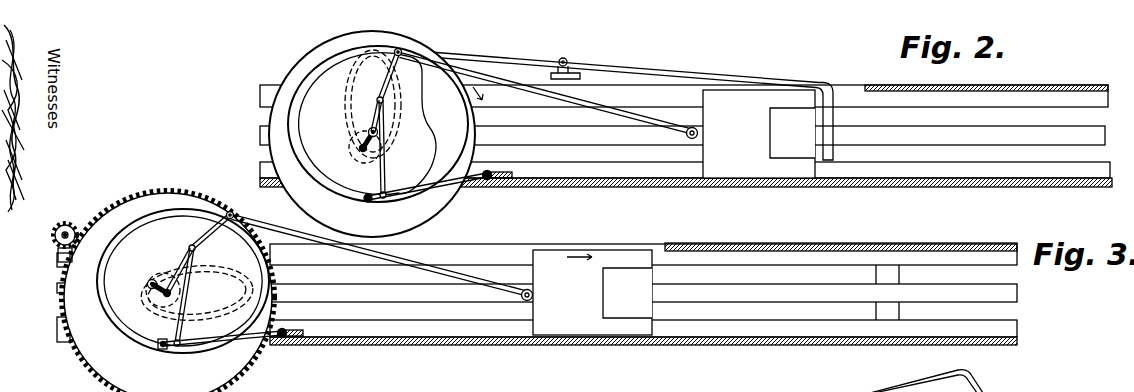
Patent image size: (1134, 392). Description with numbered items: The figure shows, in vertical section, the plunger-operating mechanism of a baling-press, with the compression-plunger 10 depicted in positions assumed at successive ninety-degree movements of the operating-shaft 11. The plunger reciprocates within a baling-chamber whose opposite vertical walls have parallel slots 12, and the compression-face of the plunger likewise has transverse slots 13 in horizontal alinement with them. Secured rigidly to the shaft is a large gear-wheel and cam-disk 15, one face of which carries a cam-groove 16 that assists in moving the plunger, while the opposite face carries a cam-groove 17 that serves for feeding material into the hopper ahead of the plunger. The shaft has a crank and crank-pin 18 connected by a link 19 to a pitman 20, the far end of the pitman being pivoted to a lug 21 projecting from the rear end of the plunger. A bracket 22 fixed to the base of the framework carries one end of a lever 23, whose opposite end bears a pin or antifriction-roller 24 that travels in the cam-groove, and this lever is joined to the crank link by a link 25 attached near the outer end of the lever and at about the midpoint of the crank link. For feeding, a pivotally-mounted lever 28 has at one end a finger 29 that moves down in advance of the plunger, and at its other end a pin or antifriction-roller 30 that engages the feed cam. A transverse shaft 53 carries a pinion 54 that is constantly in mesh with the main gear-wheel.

In FIG. 2, the compression-plunger 10 is at (735, 157).
In FIG. 3, the compression-plunger 10 is at (560, 320).
In FIG. 2, the operating-shaft 11 is at (368, 133).
In FIG. 3, the operating-shaft 11 is at (163, 296).
In FIG. 2, the slots 12 is at (1070, 127).
In FIG. 3, the slots 12 is at (792, 284).
In FIG. 2, the slots 13 is at (790, 118).
In FIG. 3, the slots 13 is at (618, 278).
In FIG. 2, the gear-wheel and cam-disk 15 is at (274, 150).
In FIG. 3, the gear-wheel and cam-disk 15 is at (202, 197).
In FIG. 2, the cam-groove 16 is at (318, 73).
In FIG. 3, the cam-groove 16 is at (131, 218).
In FIG. 2, the cam-groove 17 is at (347, 110).
In FIG. 3, the cam-groove 17 is at (190, 326).
In FIG. 2, the crank and crank-pin 18 is at (358, 150).
In FIG. 3, the crank and crank-pin 18 is at (147, 283).
In FIG. 2, the link 19 is at (400, 67).
In FIG. 3, the link 19 is at (205, 233).
In FIG. 2, the pitman 20 is at (620, 117).
In FIG. 3, the pitman 20 is at (453, 277).
In FIG. 2, the lug 21 is at (699, 131).
In FIG. 3, the lug 21 is at (534, 293).
In FIG. 2, the bracket 22 is at (485, 181).
In FIG. 3, the bracket 22 is at (282, 340).
In FIG. 2, the lever 23 is at (440, 186).
In FIG. 3, the lever 23 is at (222, 350).
In FIG. 2, the pin or antifriction-roller 24 is at (368, 202).
In FIG. 3, the pin or antifriction-roller 24 is at (165, 350).
In FIG. 2, the link 25 is at (386, 171).
In FIG. 3, the link 25 is at (186, 296).
In FIG. 2, the pivotally-mounted lever 28 is at (700, 78).
In FIG. 2, the finger 29 is at (834, 86).
In FIG. 2, the pin or antifriction-roller 30 is at (350, 47).
In FIG. 3, the pin or antifriction-roller 30 is at (183, 281).
In FIG. 3, the transverse shaft 53 is at (62, 238).
In FIG. 3, the pinion 54 is at (65, 222).